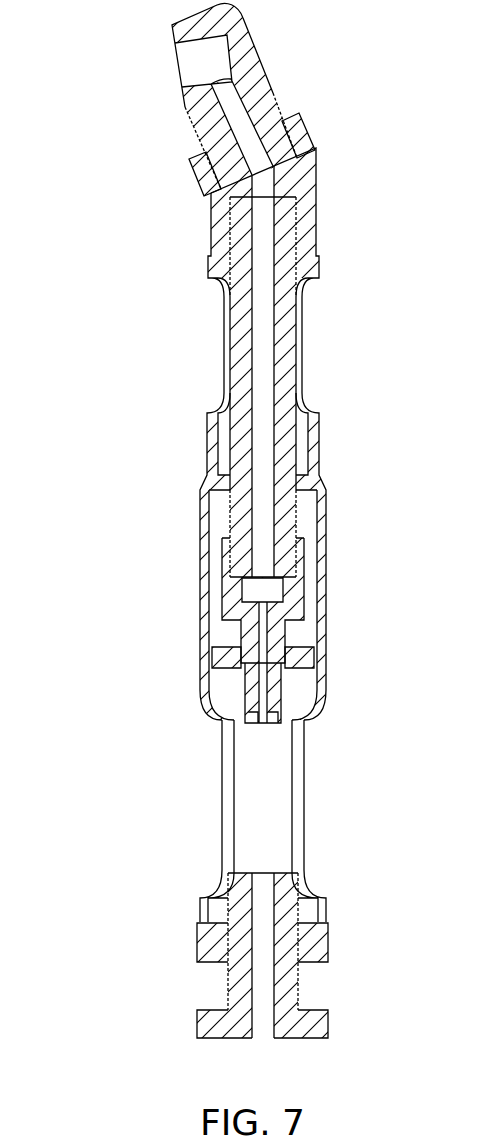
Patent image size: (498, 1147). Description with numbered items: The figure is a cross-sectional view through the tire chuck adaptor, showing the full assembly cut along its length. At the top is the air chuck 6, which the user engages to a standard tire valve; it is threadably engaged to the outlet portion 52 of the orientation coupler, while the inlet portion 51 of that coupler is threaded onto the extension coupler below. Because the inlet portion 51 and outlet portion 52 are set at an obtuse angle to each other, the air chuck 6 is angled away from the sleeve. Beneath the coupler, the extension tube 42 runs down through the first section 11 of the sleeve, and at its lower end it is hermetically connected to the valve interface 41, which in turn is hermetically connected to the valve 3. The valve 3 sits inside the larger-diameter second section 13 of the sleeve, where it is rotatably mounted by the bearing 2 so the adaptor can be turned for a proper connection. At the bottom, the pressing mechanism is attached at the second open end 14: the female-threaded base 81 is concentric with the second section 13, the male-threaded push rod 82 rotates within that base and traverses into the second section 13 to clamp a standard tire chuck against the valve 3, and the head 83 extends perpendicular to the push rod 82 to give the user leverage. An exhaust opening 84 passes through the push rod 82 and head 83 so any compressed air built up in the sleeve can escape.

The air chuck 6 is at (253, 58).
The inlet portion 51 is at (222, 148).
The outlet portion 52 is at (322, 200).
The extension tube 42 is at (238, 337).
The first section 11 is at (315, 447).
The second section 13 is at (207, 520).
The valve interface 41 is at (300, 588).
The bearing 2 is at (217, 657).
The valve 3 is at (280, 705).
The second open end 14 is at (263, 926).
The male-threaded push rod 82 is at (233, 912).
The female-threaded base 81 is at (320, 938).
The exhaust opening 84 is at (257, 987).
The head 83 is at (323, 1032).